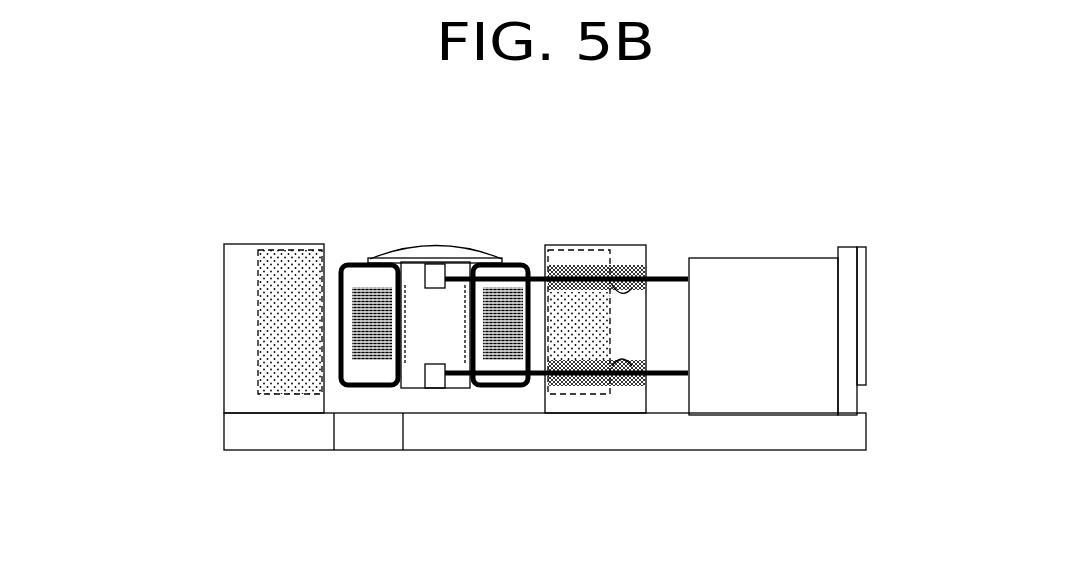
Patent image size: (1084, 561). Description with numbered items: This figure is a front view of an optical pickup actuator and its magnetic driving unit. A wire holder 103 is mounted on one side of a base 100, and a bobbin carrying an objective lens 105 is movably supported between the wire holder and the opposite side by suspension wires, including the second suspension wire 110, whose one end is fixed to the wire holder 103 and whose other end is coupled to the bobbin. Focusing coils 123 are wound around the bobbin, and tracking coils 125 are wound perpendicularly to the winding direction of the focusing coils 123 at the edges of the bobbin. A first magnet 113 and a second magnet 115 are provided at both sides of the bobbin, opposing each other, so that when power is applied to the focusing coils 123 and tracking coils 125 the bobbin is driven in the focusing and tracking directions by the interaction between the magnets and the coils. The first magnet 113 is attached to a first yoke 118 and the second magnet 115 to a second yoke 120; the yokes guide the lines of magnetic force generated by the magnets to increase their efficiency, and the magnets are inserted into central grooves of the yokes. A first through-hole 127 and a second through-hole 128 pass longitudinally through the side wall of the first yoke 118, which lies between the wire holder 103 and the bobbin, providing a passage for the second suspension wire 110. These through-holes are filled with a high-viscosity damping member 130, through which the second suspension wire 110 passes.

The base 100 is at (541, 452).
The wire holder 103 is at (772, 270).
The objective lens 105 is at (436, 245).
The second suspension wire 110 is at (673, 368).
The first magnet 113 is at (562, 262).
The second magnet 115 is at (318, 283).
The first yoke 118 is at (649, 332).
The second yoke 120 is at (224, 330).
The focusing coils 123 is at (365, 365).
The tracking coils 125 is at (400, 380).
The first through-hole 127 is at (628, 292).
The second through-hole 128 is at (638, 362).
The damping member 130 is at (597, 275).